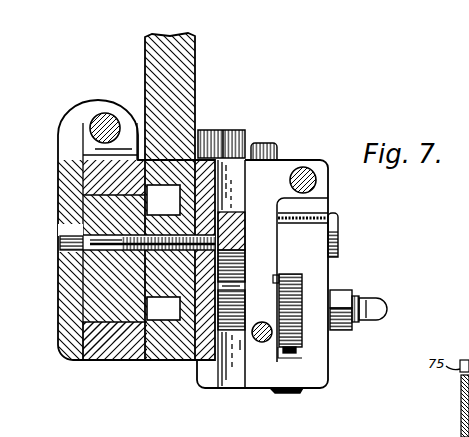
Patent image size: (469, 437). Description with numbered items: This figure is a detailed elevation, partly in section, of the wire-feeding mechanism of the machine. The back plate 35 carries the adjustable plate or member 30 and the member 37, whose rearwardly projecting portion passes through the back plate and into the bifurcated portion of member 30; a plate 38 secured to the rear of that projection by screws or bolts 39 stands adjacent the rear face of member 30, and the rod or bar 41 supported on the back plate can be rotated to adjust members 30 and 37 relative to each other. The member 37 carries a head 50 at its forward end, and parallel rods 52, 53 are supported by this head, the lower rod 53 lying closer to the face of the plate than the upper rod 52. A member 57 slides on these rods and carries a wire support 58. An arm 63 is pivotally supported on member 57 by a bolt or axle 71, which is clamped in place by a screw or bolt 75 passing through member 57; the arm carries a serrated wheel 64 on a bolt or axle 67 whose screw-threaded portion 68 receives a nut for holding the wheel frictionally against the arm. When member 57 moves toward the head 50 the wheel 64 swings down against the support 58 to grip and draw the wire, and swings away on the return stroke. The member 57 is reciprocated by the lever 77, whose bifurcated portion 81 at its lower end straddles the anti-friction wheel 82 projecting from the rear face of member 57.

The plate or member 30 is at (124, 345).
The back plate 35 is at (182, 47).
The member 37 is at (197, 302).
The plate 38 is at (77, 205).
The screws or bolts 39 is at (61, 247).
The rod or bar 41 is at (105, 118).
The head 50 is at (287, 160).
The upper rod 52 is at (309, 172).
The lower rod 53 is at (263, 342).
The member 57 is at (267, 268).
The wire support 58 is at (293, 353).
The arm 63 is at (313, 262).
The serrated wheel 64 is at (340, 296).
The bolt or axle 67 is at (387, 309).
The screw-threaded portion 68 is at (356, 322).
The bolt or axle 71 is at (342, 242).
The screw or bolt 75 is at (270, 143).
The lever 77 is at (233, 220).
The bifurcated portion 81 is at (238, 263).
The anti-friction wheel 82 is at (238, 312).